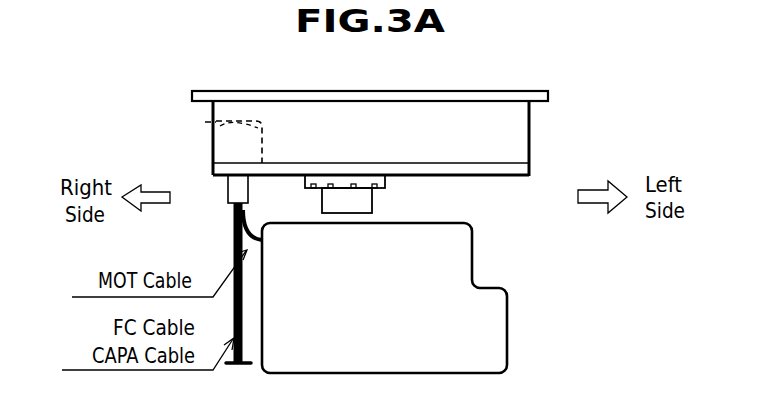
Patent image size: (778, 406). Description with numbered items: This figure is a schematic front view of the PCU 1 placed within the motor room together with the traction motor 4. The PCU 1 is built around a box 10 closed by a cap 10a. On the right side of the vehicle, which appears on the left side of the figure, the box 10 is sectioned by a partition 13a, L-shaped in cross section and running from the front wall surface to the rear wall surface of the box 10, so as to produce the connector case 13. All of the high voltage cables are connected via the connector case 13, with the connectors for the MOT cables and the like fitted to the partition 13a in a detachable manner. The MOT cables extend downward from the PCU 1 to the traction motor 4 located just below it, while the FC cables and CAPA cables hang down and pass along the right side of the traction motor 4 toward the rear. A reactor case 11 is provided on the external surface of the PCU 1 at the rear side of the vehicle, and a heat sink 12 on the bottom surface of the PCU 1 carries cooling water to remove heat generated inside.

The PCU 1 is at (186, 108).
The traction motor 4 is at (497, 333).
The box 10 is at (518, 126).
The cap 10a is at (548, 100).
The reactor case 11 is at (357, 203).
The heat sink 12 is at (484, 170).
The connector case 13 is at (250, 158).
The partition 13a is at (210, 120).